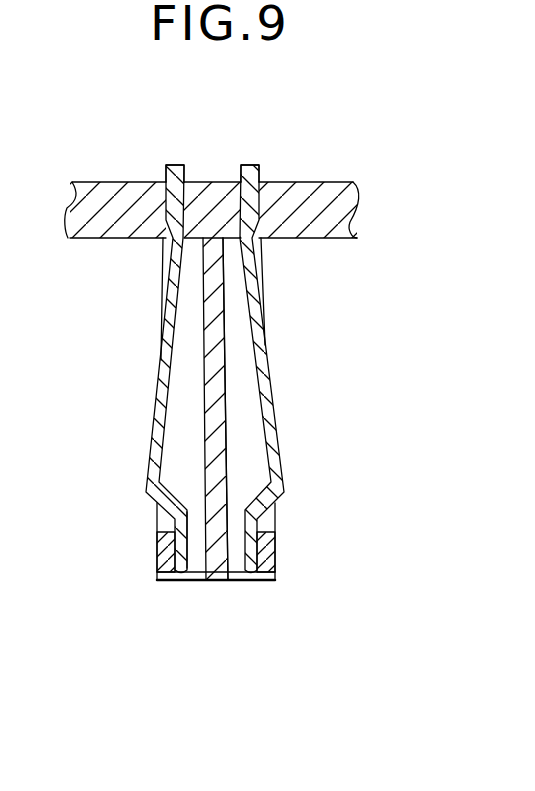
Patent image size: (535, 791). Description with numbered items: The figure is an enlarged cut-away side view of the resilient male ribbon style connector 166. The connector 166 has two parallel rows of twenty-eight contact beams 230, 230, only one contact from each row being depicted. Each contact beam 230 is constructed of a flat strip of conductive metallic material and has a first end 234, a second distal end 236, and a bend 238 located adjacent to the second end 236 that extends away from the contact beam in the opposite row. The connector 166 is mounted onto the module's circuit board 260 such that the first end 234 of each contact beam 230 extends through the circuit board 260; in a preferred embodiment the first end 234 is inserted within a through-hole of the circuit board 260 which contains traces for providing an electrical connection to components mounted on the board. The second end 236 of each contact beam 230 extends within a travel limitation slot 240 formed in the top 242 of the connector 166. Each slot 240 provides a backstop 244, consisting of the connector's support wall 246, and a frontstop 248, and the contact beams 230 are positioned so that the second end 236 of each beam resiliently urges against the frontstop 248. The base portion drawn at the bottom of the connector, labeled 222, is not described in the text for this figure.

The resilient male ribbon style connector 166 is at (323, 303).
The base 222 is at (265, 581).
The contact beam 230 is at (163, 362).
The first end 234 is at (250, 174).
The second distal end 236 is at (248, 565).
The bend 238 is at (280, 501).
The travel limitation slot 240 is at (197, 567).
The top 242 is at (218, 582).
The backstop 244 is at (236, 513).
The support wall 246 is at (210, 410).
The frontstop 248 is at (160, 557).
The circuit board 260 is at (333, 190).